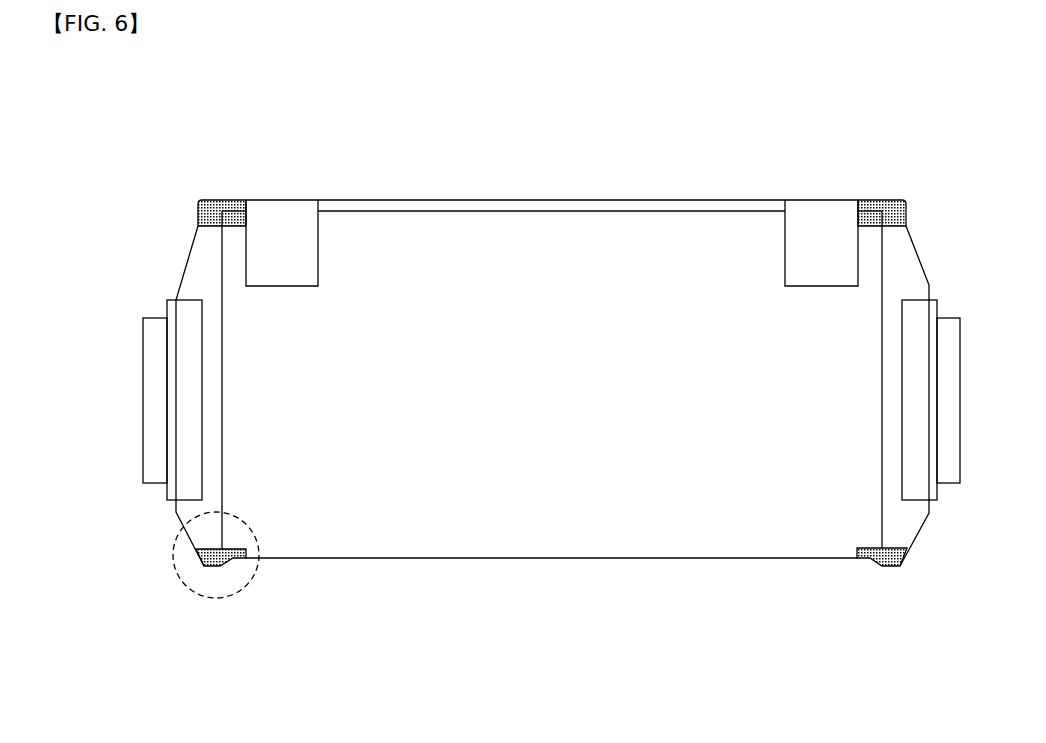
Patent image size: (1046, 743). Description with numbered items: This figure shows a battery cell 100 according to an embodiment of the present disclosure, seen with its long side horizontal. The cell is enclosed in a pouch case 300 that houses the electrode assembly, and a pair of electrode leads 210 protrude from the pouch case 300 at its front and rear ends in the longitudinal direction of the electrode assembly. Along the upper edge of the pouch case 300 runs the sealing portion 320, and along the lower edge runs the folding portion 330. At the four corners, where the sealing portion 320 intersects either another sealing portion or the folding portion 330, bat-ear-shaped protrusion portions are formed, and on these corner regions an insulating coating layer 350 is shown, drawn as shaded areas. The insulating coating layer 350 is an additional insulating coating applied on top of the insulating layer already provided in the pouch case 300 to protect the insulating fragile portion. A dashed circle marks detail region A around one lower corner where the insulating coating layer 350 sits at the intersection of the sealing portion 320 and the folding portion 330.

The battery cell 100 is at (266, 94).
The electrode lead 210 is at (157, 399).
The pouch case 300 is at (676, 178).
The sealing portion 320 is at (411, 205).
The folding portion 330 is at (459, 558).
The insulating coating layer 350 is at (212, 202).
The detail region A is at (178, 578).